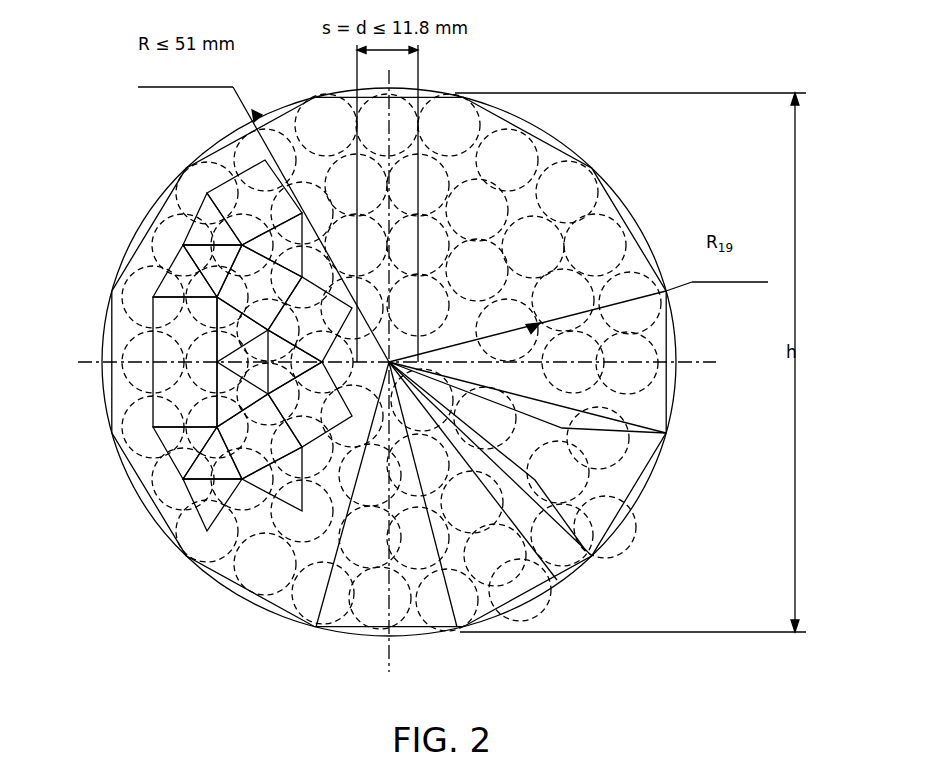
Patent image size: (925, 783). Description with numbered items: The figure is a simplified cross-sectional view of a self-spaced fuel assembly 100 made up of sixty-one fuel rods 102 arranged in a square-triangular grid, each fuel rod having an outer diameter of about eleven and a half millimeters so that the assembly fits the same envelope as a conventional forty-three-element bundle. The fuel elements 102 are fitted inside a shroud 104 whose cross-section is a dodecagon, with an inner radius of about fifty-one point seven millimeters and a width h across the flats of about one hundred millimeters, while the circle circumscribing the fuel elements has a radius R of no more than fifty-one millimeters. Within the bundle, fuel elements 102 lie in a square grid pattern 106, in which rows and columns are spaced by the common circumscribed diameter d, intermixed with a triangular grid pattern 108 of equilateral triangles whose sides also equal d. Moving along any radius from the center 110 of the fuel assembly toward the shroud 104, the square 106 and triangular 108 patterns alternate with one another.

The self-spaced fuel assembly 100 is at (445, 86).
The fuel rods 102 is at (527, 167).
The shroud 104 is at (638, 224).
The square grid pattern 106 is at (223, 180).
The triangular grid pattern 108 is at (195, 212).
The center of the fuel assembly 110 is at (547, 574).